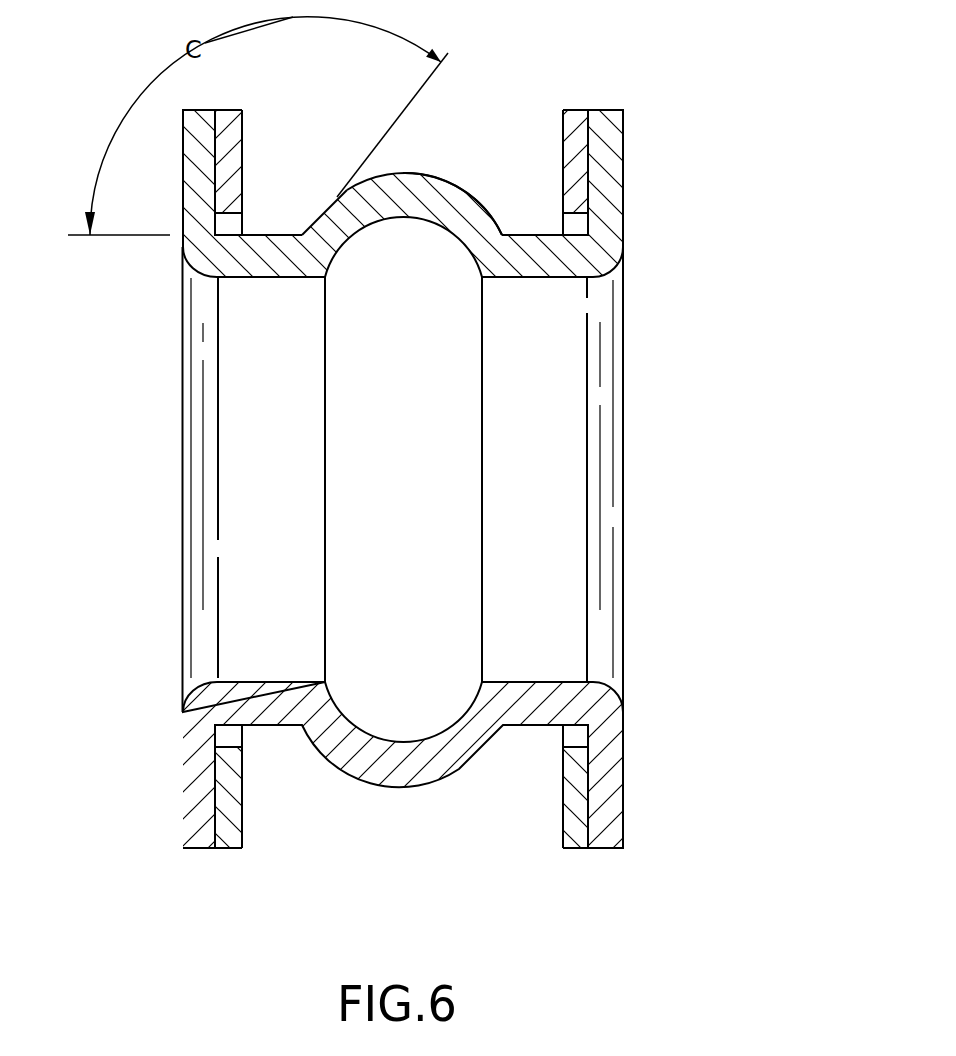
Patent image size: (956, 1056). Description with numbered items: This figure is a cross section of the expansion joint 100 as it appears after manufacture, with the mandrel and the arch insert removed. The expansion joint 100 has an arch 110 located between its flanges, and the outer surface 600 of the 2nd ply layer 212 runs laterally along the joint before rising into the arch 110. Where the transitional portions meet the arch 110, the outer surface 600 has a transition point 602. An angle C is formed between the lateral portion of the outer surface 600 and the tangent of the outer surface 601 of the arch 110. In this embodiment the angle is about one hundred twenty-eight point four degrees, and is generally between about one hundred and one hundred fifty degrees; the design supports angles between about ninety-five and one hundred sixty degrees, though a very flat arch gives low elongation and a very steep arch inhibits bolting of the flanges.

The expansion joint 100 is at (494, 484).
The arch 110 is at (427, 786).
The 2nd ply layer 212 is at (450, 182).
The outer surface 600 is at (480, 203).
The outer surface of the arch 601 is at (332, 203).
The transition point 602 is at (302, 231).